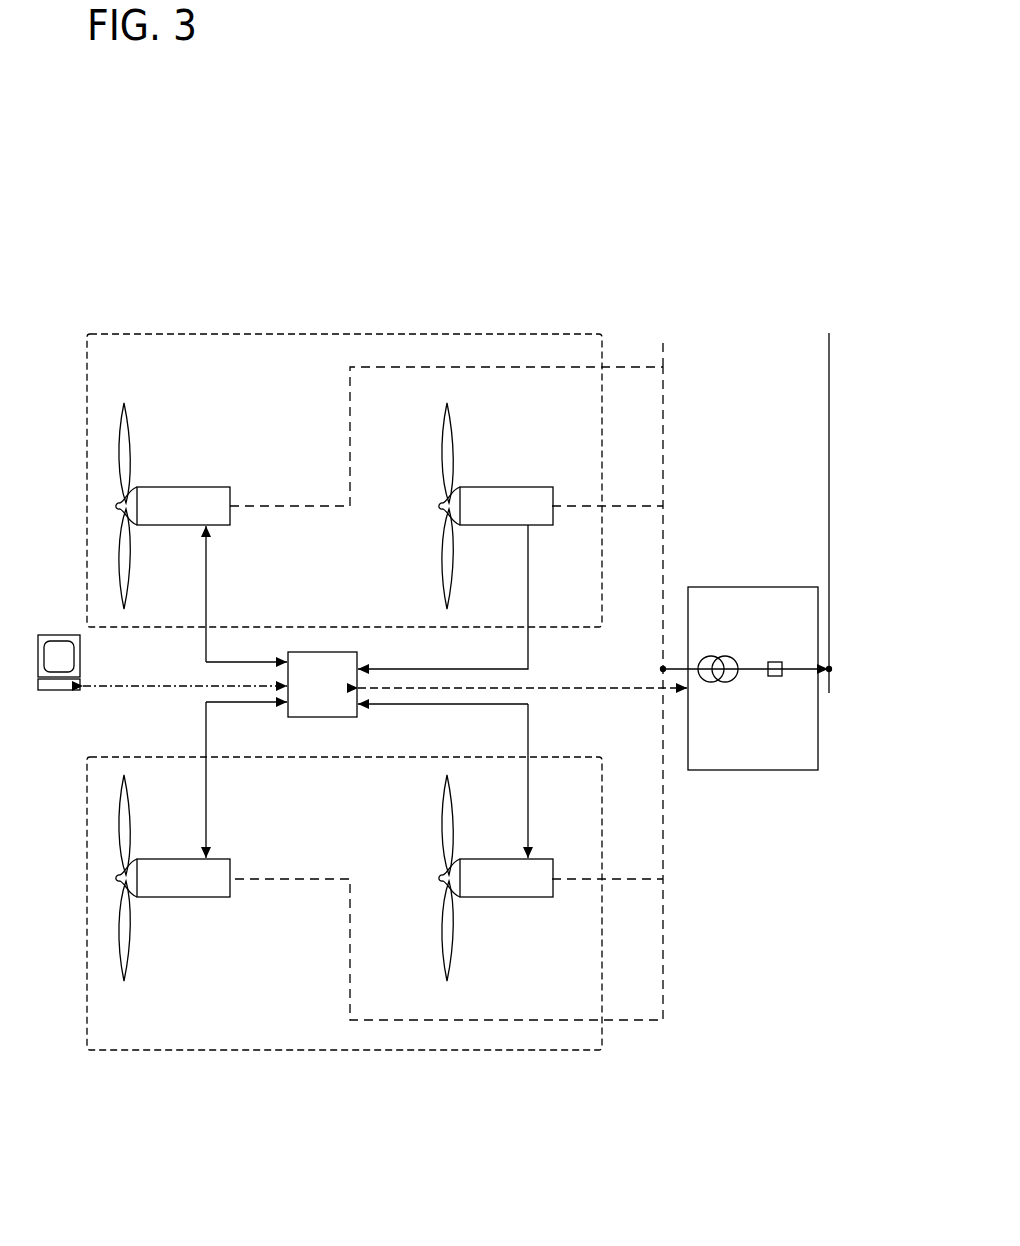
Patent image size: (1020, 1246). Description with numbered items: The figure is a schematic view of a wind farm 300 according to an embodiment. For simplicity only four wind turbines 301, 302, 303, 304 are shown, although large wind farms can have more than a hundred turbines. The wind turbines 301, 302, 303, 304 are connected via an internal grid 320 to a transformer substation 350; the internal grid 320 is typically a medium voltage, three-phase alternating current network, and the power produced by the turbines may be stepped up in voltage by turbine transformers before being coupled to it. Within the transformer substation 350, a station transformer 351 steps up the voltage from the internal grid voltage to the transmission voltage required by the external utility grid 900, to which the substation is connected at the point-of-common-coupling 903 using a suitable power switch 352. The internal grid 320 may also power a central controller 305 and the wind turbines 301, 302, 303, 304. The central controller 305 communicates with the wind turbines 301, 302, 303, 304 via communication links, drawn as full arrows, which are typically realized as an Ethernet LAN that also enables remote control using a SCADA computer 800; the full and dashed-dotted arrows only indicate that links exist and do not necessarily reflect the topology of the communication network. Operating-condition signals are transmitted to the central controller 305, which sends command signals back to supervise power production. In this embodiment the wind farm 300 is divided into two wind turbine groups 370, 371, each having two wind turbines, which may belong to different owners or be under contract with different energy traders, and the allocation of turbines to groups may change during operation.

The wind farm 300 is at (232, 248).
The wind turbine group 370 is at (153, 337).
The wind turbine group 371 is at (157, 1052).
The internal grid 320 is at (663, 397).
The wind turbine 301 is at (223, 467).
The wind turbine 302 is at (478, 458).
The wind turbine 303 is at (182, 923).
The wind turbine 304 is at (492, 917).
The central controller 305 is at (343, 696).
The SCADA computer 800 is at (57, 628).
The transformer substation 350 is at (744, 727).
The station transformer 351 is at (712, 655).
The power switch 352 is at (776, 677).
The point-of-common-coupling 903 is at (823, 658).
The utility grid 900 is at (828, 538).